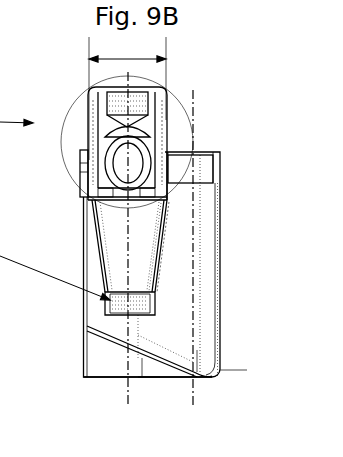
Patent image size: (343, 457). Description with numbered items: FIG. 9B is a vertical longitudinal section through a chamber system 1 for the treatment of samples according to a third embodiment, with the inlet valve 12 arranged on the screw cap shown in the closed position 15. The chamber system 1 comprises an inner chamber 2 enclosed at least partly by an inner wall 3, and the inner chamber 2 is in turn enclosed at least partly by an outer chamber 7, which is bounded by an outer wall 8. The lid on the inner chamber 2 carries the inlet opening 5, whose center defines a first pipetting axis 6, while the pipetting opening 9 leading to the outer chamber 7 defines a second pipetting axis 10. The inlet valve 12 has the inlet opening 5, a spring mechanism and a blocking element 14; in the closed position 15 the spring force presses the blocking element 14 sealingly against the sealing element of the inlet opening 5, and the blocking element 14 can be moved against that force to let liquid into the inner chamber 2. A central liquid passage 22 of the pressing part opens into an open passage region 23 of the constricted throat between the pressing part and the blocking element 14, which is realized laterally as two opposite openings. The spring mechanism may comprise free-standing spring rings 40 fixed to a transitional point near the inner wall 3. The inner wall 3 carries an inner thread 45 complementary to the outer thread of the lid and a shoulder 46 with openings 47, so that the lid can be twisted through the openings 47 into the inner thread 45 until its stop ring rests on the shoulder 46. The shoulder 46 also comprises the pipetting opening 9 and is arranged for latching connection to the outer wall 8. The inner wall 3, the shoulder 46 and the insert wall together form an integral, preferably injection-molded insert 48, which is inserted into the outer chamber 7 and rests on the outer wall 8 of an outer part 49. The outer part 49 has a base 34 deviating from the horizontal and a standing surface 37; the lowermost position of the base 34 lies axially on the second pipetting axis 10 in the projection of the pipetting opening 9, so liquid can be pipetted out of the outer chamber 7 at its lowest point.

The chamber system 1 is at (274, 106).
The inner chamber 2 is at (116, 250).
The inner wall 3 is at (156, 267).
The inlet opening 5 is at (132, 88).
The first pipetting axis 6 is at (128, 366).
The outer chamber 7 is at (180, 298).
The outer wall 8 is at (219, 323).
The pipetting opening 9 is at (202, 141).
The second pipetting axis 10 is at (200, 350).
The inlet valve 12 is at (72, 182).
The blocking element 14 is at (153, 118).
The closed position 15 is at (63, 182).
The central liquid passage 22 is at (120, 82).
The open passage region 23 is at (95, 106).
The base 34 is at (86, 341).
The standing surface 37 is at (142, 386).
The spring rings 40 is at (213, 167).
The inner thread 45 is at (79, 167).
The shoulder 46 is at (80, 153).
The opening 47 is at (127, 96).
The insert 48 is at (176, 227).
The outer part 49 is at (229, 297).